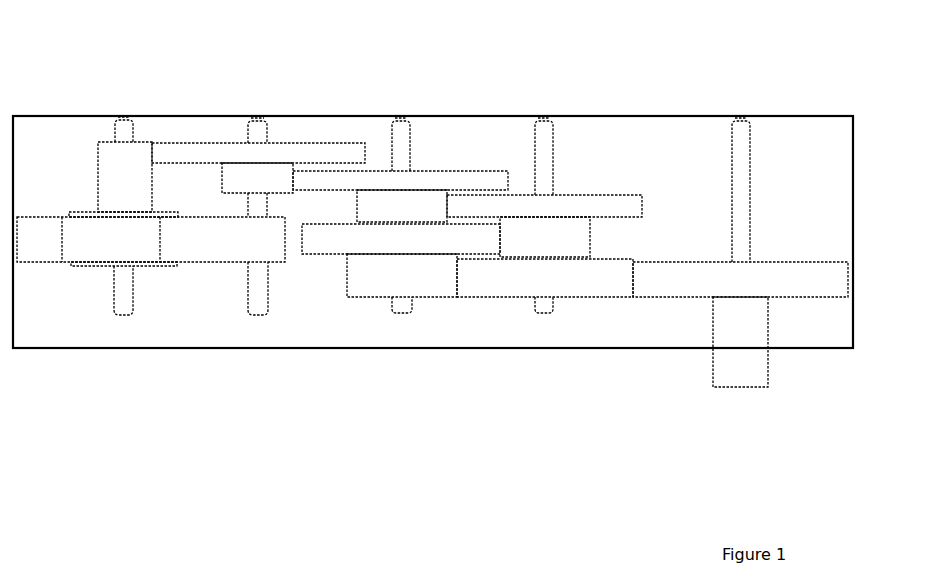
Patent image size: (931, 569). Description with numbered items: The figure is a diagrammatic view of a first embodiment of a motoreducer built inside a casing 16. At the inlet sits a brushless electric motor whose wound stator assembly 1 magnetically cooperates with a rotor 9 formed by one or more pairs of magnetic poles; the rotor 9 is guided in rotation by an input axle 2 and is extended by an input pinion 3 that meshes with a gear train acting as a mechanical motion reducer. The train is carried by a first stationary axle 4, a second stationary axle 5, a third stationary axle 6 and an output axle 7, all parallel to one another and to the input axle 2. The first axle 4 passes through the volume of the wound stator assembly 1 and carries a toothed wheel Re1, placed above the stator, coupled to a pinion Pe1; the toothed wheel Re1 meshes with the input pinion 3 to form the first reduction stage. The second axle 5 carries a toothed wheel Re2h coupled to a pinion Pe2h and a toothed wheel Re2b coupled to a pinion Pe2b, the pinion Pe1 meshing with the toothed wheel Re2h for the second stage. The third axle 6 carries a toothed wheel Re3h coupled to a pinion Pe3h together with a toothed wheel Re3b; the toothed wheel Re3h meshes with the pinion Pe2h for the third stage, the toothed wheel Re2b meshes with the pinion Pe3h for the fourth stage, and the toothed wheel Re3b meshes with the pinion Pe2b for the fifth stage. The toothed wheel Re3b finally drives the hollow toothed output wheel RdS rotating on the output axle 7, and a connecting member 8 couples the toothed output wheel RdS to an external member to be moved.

The wound stator assembly 1 is at (40, 245).
The input axle 2 is at (124, 298).
The input pinion 3 is at (107, 187).
The first stationary axle 4 is at (262, 131).
The second stationary axle 5 is at (408, 133).
The third stationary axle 6 is at (550, 133).
The output axle 7 is at (745, 167).
The connecting member 8 is at (758, 368).
The rotor 9 is at (85, 264).
The casing 16 is at (855, 117).
The pinion Pe1 is at (243, 180).
The toothed wheel Re1 is at (223, 153).
The toothed wheel Re2h is at (345, 180).
The pinion Pe2h is at (387, 202).
The toothed wheel Re3h is at (560, 200).
The pinion Pe3h is at (567, 232).
The toothed output wheel RdS is at (787, 278).
The toothed wheel Re2b is at (368, 238).
The pinion Pe2b is at (392, 275).
The toothed wheel Re3b is at (540, 280).